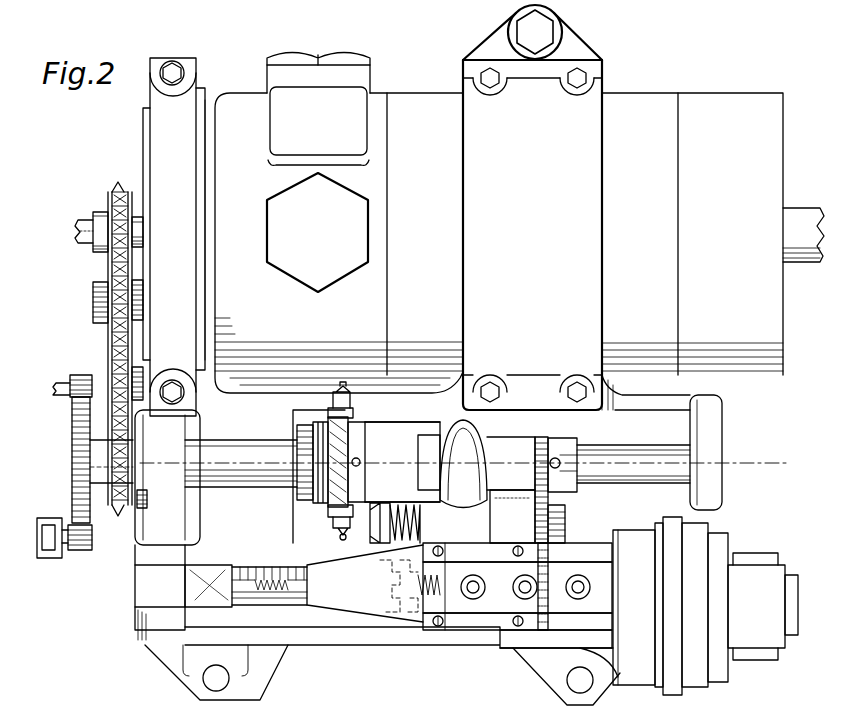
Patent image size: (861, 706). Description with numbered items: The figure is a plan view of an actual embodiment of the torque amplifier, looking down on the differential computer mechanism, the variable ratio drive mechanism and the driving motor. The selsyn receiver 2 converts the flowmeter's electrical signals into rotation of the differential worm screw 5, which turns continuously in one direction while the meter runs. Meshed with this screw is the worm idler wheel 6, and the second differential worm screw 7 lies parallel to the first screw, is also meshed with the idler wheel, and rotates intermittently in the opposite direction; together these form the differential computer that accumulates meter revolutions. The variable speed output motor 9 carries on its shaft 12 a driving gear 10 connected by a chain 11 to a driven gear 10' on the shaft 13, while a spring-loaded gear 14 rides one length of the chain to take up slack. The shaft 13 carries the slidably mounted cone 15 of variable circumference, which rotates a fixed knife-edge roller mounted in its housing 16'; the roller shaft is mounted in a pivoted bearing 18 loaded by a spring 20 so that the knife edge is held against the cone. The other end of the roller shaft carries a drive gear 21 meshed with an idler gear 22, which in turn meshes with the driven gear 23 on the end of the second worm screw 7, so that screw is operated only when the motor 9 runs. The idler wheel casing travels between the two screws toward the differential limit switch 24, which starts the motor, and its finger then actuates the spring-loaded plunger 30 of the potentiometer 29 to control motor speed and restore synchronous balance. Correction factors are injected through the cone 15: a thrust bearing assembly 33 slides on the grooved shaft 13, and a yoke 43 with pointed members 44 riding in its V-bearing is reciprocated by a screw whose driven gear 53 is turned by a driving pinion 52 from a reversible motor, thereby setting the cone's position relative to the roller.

The selsyn receiver 2 is at (705, 606).
The differential worm screw 5 is at (440, 543).
The worm idler wheel 6 is at (100, 460).
The second differential worm screw 7 is at (268, 575).
The variable speed output motor 9 is at (494, 223).
The driving gear 10 is at (106, 345).
The driven gear 10' is at (132, 524).
The chain 11 is at (108, 262).
The shaft 12 is at (792, 208).
The shaft 13 is at (238, 446).
The spring-loaded gear 14 is at (93, 298).
The cone 15 is at (370, 462).
The housing 16' is at (487, 481).
The pivoted bearing 18 is at (420, 450).
The spring 20 is at (395, 514).
The drive gear 21 is at (560, 445).
The idler gear 22 is at (550, 522).
The driven gear 23 is at (547, 578).
The differential limit switch 24 is at (236, 578).
The potentiometer 29 is at (517, 595).
The spring-loaded plunger 30 is at (410, 588).
The thrust bearing assembly 33 is at (300, 505).
The yoke 43 is at (330, 530).
The pointed members 44 is at (328, 512).
The driving pinion 52 is at (78, 375).
The driven gear 53 is at (72, 440).